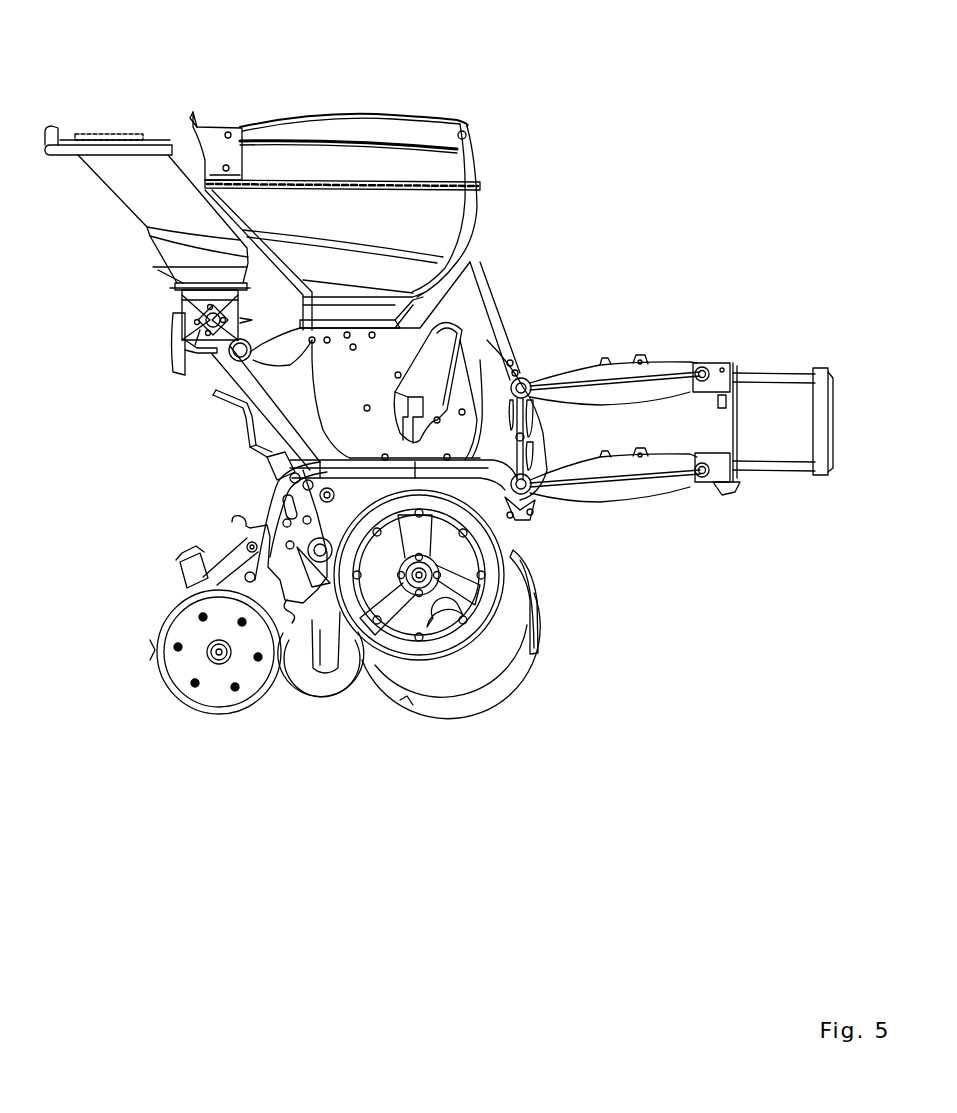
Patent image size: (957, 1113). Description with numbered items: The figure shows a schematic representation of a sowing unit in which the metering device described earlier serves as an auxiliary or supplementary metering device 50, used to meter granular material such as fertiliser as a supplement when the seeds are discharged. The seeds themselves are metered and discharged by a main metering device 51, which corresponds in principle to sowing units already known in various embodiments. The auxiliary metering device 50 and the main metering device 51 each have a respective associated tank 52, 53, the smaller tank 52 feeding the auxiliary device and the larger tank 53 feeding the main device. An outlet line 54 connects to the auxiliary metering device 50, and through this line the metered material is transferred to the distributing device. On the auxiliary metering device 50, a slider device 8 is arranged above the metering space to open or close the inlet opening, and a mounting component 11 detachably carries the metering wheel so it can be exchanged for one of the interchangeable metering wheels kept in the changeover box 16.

The slider device 8 is at (182, 302).
The mounting component 11 is at (200, 320).
The changeover box 16 is at (188, 376).
The auxiliary metering device 50 is at (187, 372).
The main metering device 51 is at (420, 349).
The tank 52 is at (143, 188).
The tank 53 is at (393, 212).
The outlet line 54 is at (233, 378).